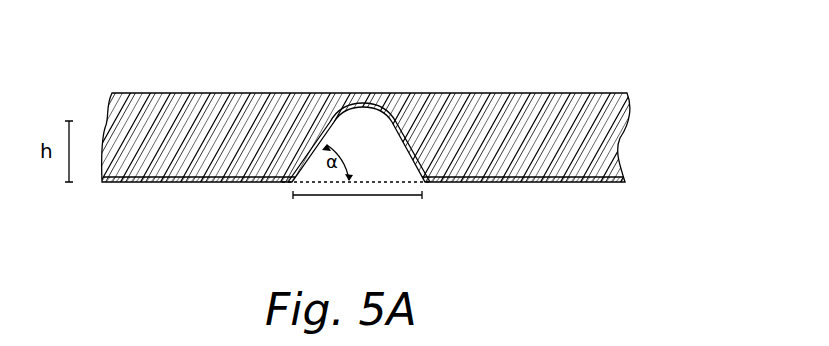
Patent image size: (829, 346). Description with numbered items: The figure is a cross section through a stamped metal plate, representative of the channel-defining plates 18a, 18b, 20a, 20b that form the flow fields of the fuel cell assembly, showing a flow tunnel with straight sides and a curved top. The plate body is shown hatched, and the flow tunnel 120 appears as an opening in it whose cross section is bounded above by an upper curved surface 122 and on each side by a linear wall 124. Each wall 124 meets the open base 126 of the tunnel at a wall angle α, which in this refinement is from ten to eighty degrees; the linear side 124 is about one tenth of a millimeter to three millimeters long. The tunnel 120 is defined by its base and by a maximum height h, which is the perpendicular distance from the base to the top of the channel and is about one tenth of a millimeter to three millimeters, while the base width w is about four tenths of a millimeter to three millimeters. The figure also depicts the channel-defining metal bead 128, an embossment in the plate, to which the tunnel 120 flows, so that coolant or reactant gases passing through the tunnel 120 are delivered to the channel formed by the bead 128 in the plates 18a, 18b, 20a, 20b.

The flow tunnel 120 is at (404, 168).
The upper curved surface 122 is at (366, 138).
The wall 124 is at (316, 133).
The open base 126 is at (328, 181).
The channel-defining metal bead 128 is at (560, 116).
The channel-defining plate 18a is at (414, 228).
The channel-defining plate 18b is at (414, 228).
The channel-defining plate 20a is at (414, 228).
The channel-defining plate 20b is at (557, 182).